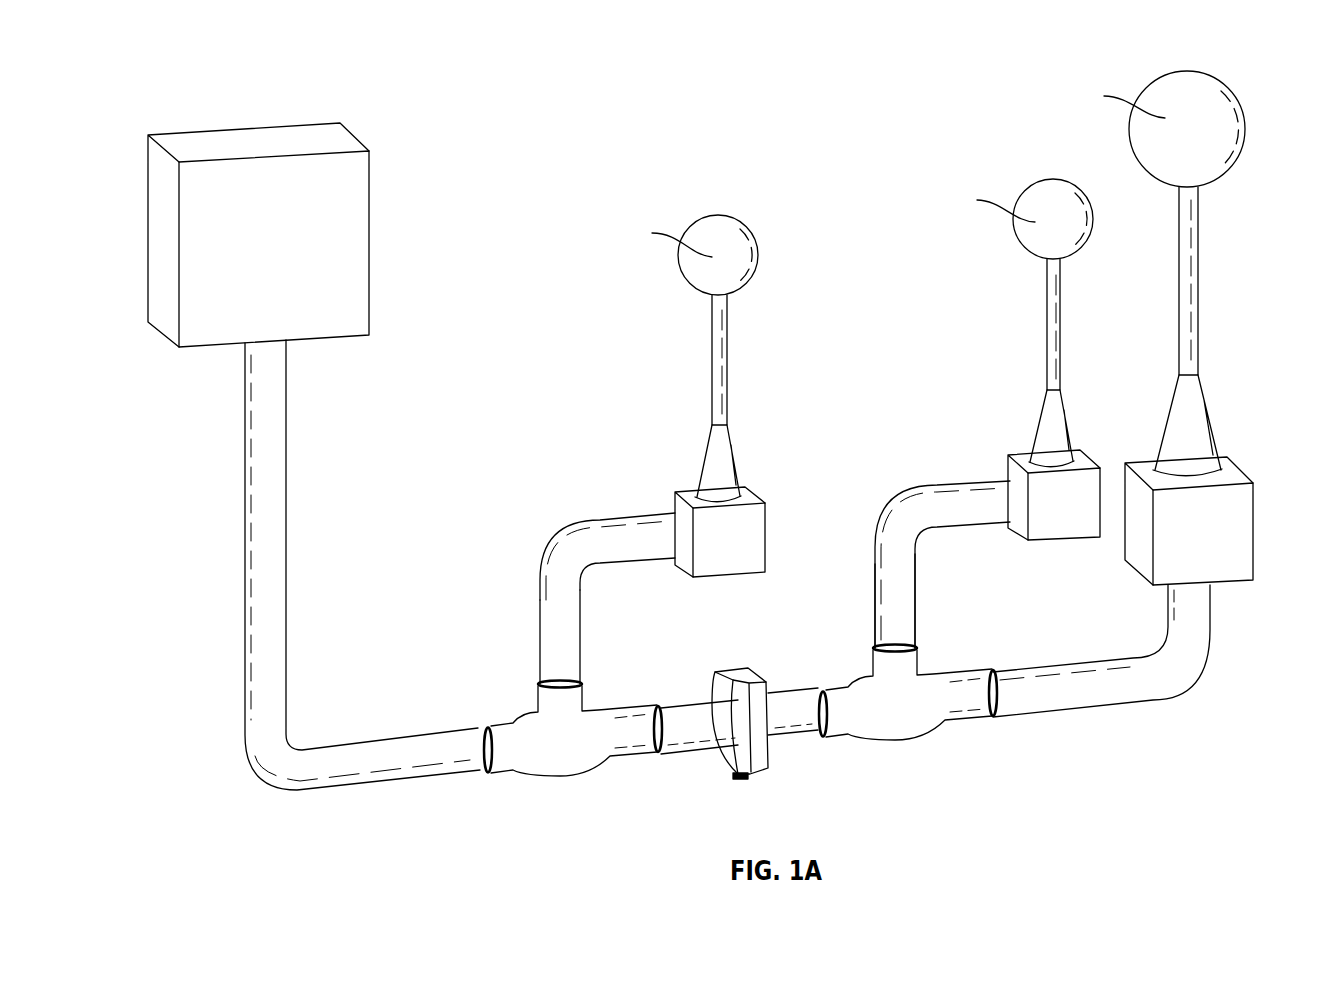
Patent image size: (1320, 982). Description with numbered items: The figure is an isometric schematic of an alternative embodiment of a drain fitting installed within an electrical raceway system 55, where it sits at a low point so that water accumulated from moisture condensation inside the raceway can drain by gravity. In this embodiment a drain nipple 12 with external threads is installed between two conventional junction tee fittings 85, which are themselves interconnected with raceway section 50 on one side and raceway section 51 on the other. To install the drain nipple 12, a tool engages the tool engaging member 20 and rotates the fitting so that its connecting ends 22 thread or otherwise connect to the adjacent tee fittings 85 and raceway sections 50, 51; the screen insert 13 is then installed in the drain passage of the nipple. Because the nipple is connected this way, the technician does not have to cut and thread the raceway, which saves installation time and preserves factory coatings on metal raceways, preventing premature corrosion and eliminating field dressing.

The electrical raceway system 55 is at (438, 74).
The raceway section 50 is at (342, 767).
The junction tee fitting 85 is at (562, 775).
The drain nipple 12 is at (683, 707).
The tool engaging member 20 is at (753, 680).
The screen insert 13 is at (738, 781).
The connecting end 22 is at (790, 723).
The raceway section 51 is at (1092, 687).